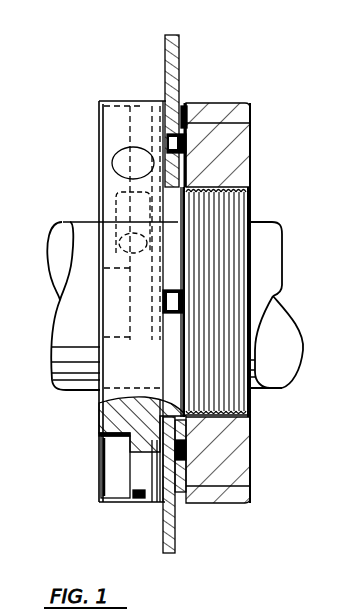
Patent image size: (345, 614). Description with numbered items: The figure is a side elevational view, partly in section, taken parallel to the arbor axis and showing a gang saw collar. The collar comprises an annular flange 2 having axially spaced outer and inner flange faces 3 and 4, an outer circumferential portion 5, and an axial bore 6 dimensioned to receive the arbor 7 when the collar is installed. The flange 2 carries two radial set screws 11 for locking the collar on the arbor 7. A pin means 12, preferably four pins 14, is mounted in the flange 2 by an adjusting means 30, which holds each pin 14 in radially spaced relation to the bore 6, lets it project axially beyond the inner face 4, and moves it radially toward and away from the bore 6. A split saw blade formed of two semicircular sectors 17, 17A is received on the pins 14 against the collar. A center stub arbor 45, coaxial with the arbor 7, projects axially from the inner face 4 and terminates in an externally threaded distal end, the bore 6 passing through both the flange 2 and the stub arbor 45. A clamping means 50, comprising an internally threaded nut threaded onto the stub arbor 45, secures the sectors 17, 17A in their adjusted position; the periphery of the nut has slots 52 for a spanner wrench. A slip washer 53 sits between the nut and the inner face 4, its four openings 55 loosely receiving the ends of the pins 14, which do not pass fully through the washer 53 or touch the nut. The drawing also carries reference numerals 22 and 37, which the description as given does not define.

The annular flange 2 is at (165, 5).
The outer flange face 3 is at (100, 179).
The inner flange face 4 is at (187, 98).
The outer circumferential portion 5 is at (107, 503).
The axial bore 6 is at (273, 218).
The arbor 7 is at (276, 245).
The radial set screws 11 is at (114, 200).
The pin means 12 is at (198, 462).
The pins 14 is at (188, 146).
The semicircular sector 17 is at (164, 52).
The semicircular sector 17A is at (162, 537).
The threads 22 is at (180, 207).
The adjusting means 30 is at (100, 490).
The spring 37 is at (142, 500).
The center stub arbor 45 is at (251, 402).
The clamping means 50 is at (251, 133).
The slots 52 is at (251, 106).
The slip washer 53 is at (186, 108).
The openings 55 is at (198, 447).